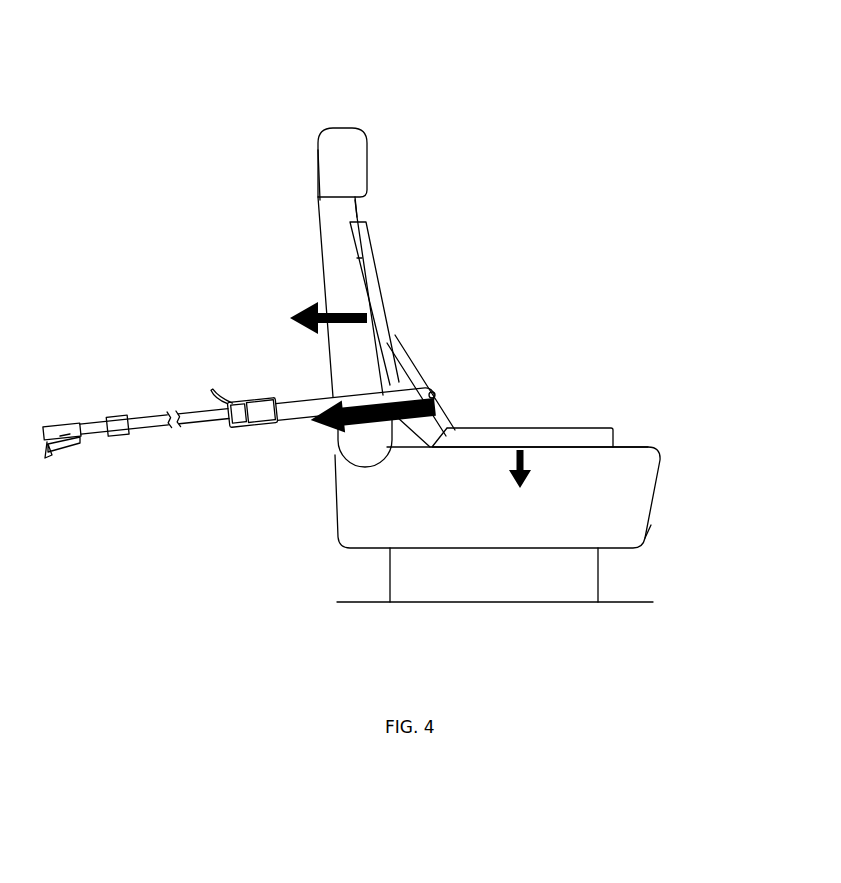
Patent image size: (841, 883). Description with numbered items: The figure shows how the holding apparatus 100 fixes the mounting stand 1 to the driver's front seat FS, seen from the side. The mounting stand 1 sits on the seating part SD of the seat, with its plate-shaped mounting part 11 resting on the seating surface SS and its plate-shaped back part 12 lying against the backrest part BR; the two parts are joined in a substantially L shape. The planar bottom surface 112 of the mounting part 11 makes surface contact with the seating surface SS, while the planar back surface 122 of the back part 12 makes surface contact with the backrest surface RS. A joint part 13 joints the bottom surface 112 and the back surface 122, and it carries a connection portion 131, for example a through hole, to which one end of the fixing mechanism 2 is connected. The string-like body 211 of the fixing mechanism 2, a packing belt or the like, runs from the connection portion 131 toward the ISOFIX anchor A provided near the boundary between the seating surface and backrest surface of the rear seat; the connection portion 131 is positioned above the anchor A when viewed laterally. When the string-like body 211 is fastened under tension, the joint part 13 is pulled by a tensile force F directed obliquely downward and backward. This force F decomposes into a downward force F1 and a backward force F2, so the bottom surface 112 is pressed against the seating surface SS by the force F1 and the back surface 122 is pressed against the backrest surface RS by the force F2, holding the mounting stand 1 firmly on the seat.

The holding apparatus 100 is at (570, 195).
The mounting stand 1 is at (433, 320).
The fixing mechanism 2 is at (233, 467).
The mounting part 11 is at (547, 426).
The bottom surface 112 is at (592, 448).
The back part 12 is at (372, 265).
The back surface 122 is at (357, 258).
The joint part 13 is at (413, 378).
The connection portion 131 is at (441, 398).
The string-like body 211 is at (297, 402).
The front seat FS is at (318, 147).
The backrest part BR is at (318, 215).
The backrest surface RS is at (355, 213).
The seating surface SS is at (643, 447).
The seating part SD is at (651, 525).
The ISOFIX anchor A is at (67, 425).
The tensile force F is at (373, 420).
The downward force F1 is at (531, 469).
The backward force F2 is at (325, 314).